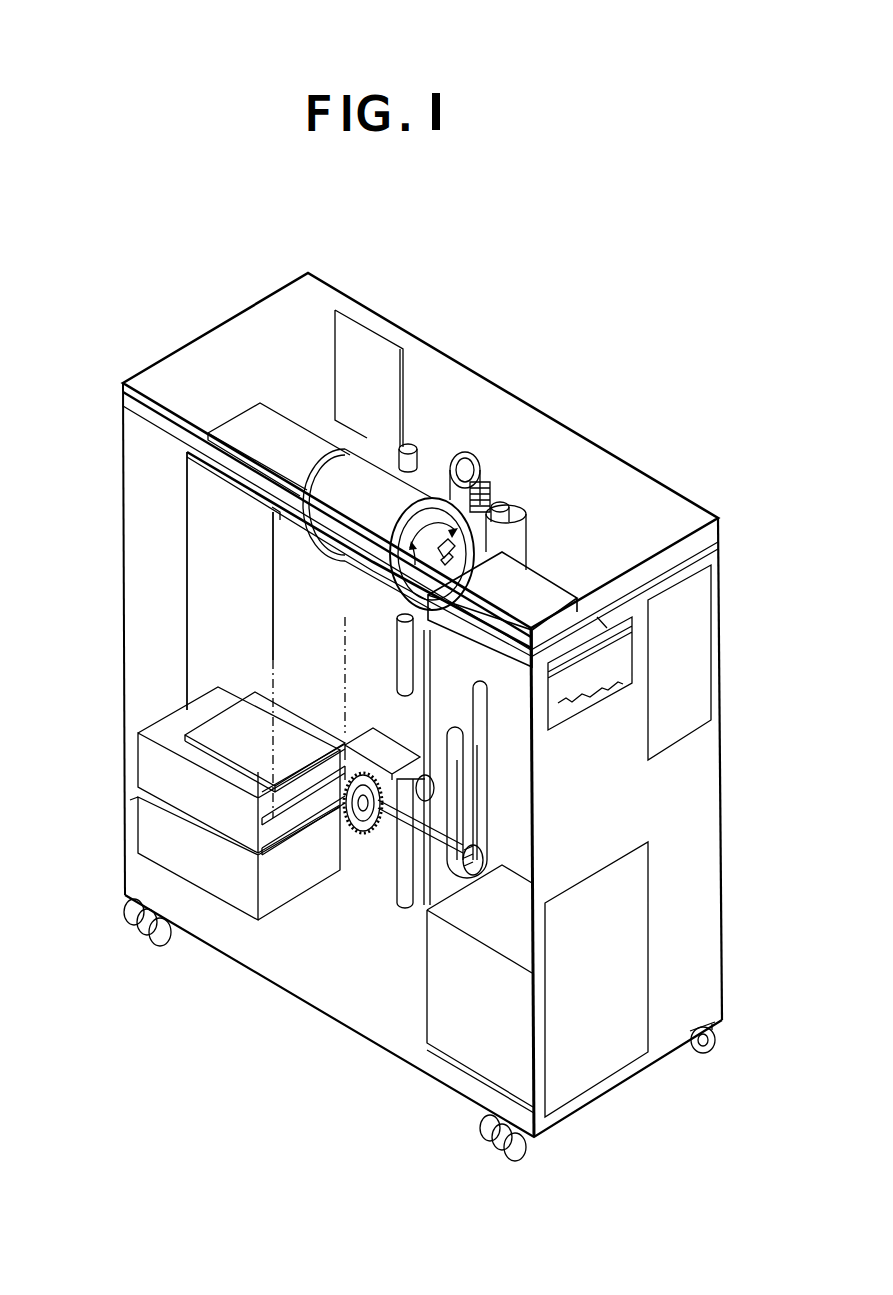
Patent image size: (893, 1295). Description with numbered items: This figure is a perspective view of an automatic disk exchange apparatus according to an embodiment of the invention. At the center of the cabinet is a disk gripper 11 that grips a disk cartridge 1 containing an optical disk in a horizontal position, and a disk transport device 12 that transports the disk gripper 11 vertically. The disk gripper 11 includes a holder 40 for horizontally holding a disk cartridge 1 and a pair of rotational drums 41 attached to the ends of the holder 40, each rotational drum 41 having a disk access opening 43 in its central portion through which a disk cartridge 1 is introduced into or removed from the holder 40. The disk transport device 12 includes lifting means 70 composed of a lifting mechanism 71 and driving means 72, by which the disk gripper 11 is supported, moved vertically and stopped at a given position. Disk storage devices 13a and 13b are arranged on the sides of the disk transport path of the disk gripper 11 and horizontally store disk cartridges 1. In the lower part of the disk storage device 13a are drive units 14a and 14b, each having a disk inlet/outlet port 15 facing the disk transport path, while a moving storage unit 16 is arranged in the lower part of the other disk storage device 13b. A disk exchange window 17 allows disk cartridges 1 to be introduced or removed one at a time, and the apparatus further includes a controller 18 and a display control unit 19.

The disk cartridge 1 is at (225, 732).
The disk gripper 11 is at (360, 570).
The disk transport device 12 is at (535, 530).
The disk storage device 13a is at (185, 642).
The disk storage device 13b is at (488, 782).
The drive unit 14a is at (160, 777).
The drive unit 14b is at (143, 840).
The disk inlet/outlet port 15 is at (257, 815).
The moving storage unit 16 is at (470, 1057).
The disk exchange window 17 is at (600, 660).
The controller 18 is at (400, 347).
The display control unit 19 is at (700, 632).
The holder 40 is at (350, 520).
The rotational drum 41 is at (345, 450).
The disk access opening 43 is at (458, 573).
The lifting means 70 is at (370, 858).
The lifting mechanism 71 is at (478, 440).
The driving means 72 is at (370, 748).